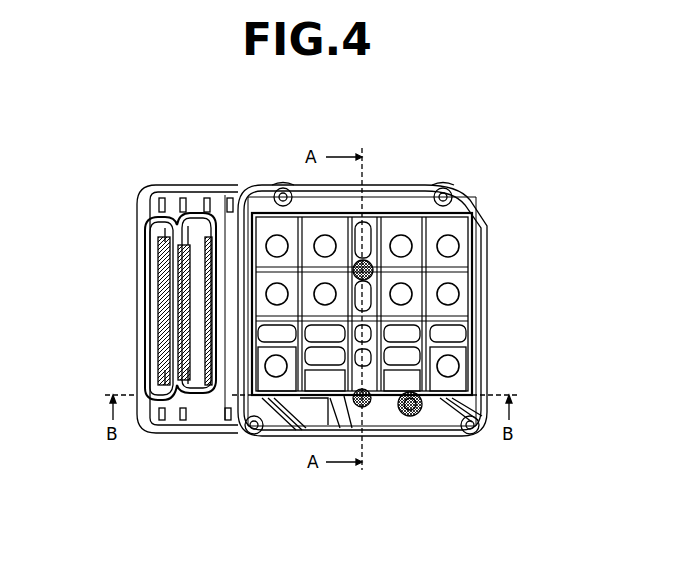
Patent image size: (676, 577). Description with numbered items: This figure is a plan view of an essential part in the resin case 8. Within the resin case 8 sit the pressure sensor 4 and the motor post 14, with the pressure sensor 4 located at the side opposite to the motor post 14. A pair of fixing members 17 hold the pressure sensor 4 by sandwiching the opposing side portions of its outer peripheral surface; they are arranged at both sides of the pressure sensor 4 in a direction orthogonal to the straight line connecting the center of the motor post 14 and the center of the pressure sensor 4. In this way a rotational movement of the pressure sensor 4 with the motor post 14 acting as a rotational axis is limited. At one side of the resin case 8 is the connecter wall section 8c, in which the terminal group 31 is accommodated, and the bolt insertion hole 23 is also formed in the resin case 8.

The resin case 8 is at (425, 180).
The connecter wall section 8c is at (143, 243).
The terminal group 31 is at (145, 297).
The motor post 14 is at (380, 266).
The pressure sensor 4 is at (388, 378).
The fixing members 17 is at (396, 431).
The bolt insertion hole 23 is at (473, 433).